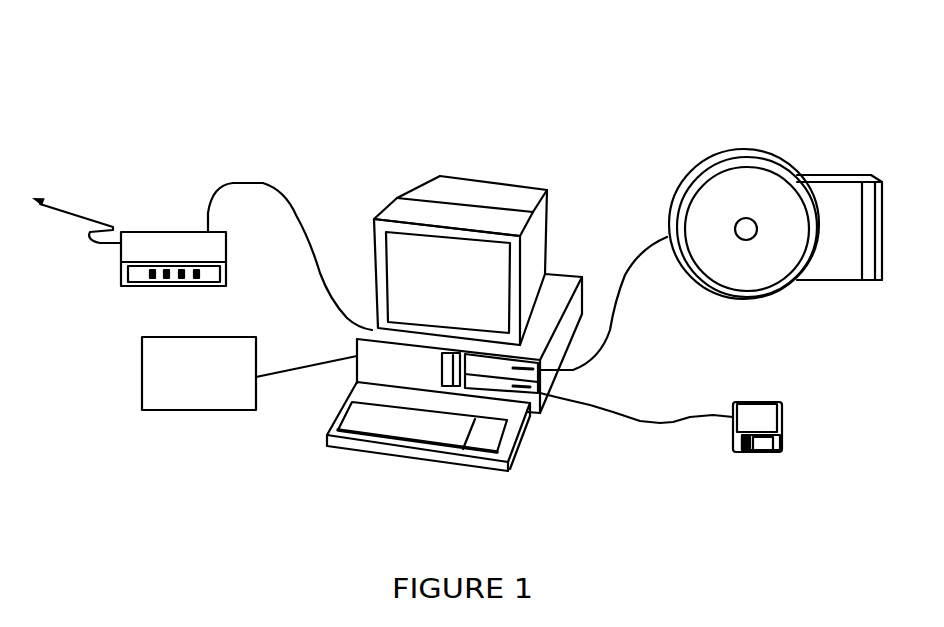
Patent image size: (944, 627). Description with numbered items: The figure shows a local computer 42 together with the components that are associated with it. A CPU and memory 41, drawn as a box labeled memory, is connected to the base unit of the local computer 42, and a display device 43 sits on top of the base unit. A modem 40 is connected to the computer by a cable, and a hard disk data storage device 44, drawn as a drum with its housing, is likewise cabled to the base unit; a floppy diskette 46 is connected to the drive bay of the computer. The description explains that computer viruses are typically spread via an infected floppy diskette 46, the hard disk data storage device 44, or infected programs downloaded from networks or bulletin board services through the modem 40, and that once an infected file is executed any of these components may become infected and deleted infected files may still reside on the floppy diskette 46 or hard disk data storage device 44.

The modem 40 is at (173, 232).
The CPU and memory 41 is at (140, 390).
The local computer 42 is at (608, 122).
The display device 43 is at (437, 176).
The hard disk data storage device 44 is at (770, 163).
The floppy diskette 46 is at (755, 402).